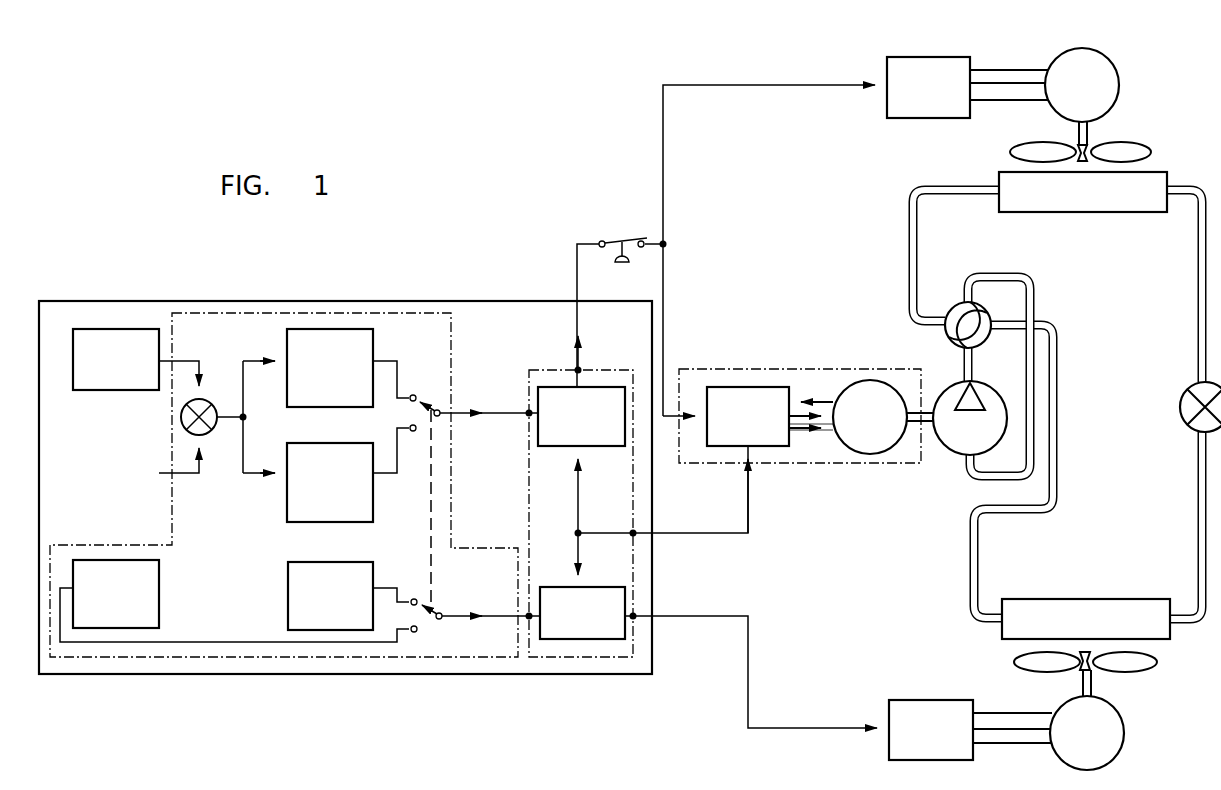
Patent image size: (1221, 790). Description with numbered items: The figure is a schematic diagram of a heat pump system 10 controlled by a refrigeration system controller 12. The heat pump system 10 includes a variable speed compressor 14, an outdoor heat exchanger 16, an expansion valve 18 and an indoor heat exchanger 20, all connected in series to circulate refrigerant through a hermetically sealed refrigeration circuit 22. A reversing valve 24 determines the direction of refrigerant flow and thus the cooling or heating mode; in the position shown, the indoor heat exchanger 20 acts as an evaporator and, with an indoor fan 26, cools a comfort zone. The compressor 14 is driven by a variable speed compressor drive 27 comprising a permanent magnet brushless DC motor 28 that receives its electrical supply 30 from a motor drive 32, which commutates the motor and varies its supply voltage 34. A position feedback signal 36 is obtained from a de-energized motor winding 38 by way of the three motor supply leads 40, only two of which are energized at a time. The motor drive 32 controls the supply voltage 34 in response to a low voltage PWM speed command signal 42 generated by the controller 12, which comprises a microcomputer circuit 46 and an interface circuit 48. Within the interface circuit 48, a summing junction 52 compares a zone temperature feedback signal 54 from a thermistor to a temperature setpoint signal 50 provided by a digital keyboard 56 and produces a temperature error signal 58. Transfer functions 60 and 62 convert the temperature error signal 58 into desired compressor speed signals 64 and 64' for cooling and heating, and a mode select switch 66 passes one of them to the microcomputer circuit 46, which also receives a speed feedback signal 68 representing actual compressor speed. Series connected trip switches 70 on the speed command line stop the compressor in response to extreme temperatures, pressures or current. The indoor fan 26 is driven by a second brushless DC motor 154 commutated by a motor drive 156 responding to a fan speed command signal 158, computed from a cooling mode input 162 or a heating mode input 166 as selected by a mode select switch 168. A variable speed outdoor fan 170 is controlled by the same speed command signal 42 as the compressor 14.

The heat pump system 10 is at (1036, 404).
The refrigeration system controller 12 is at (207, 674).
The variable speed compressor 14 is at (947, 450).
The outdoor heat exchanger 16 is at (1097, 205).
The expansion valve 18 is at (1182, 416).
The indoor heat exchanger 20 is at (1095, 603).
The refrigeration circuit 22 is at (1198, 287).
The reversing valve 24 is at (950, 305).
The indoor fan 26 is at (1140, 665).
The variable speed compressor drive 27 is at (905, 467).
The brushless DC motor 28 is at (888, 382).
The electrical supply 30 is at (802, 432).
The motor drive 32 is at (718, 447).
The supply voltage 34 is at (810, 432).
The position feedback signal 36 is at (816, 400).
The de-energized motor winding 38 is at (836, 400).
The motor supply leads 40 is at (841, 452).
The speed command signal 42 is at (577, 250).
The microcomputer circuit 46 is at (598, 366).
The interface circuit 48 is at (268, 314).
The temperature setpoint signal 50 is at (193, 361).
The summing junction 52 is at (213, 402).
The zone temperature feedback signal 54 is at (197, 474).
The digital keyboard 56 is at (80, 329).
The temperature error signal 58 is at (220, 422).
The transfer function 60 is at (374, 341).
The transfer function 62 is at (373, 503).
The desired compressor speed signal 64 is at (404, 371).
The desired compressor speed signal 64' is at (379, 441).
The mode select switch 66 is at (433, 408).
The speed feedback signal 68 is at (748, 527).
The trip switches 70 is at (616, 242).
The brushless DC motor 154 is at (1124, 735).
The motor drive 156 is at (948, 706).
The fan speed command signal 158 is at (813, 727).
The input 162 is at (288, 603).
The input 166 is at (159, 576).
The mode select switch 168 is at (445, 621).
The variable speed outdoor fan 170 is at (1112, 66).